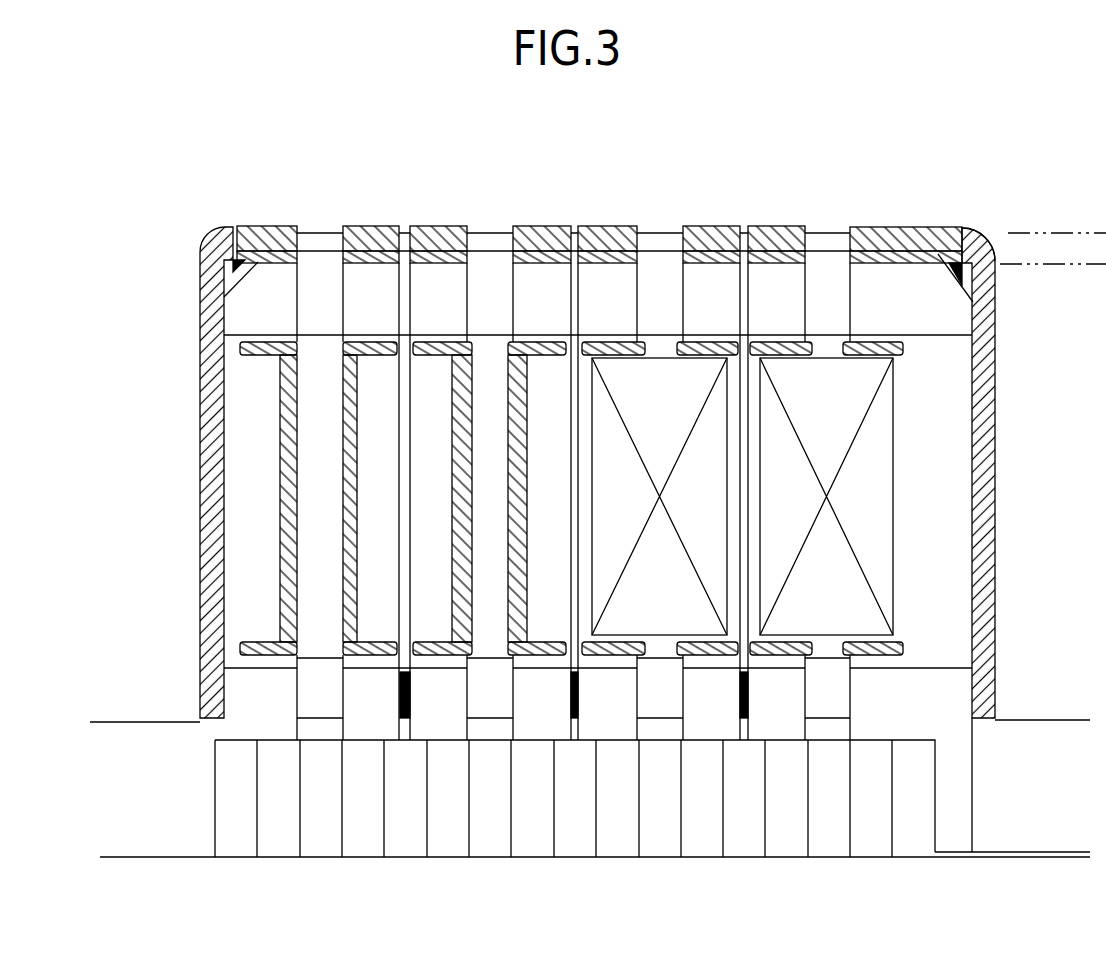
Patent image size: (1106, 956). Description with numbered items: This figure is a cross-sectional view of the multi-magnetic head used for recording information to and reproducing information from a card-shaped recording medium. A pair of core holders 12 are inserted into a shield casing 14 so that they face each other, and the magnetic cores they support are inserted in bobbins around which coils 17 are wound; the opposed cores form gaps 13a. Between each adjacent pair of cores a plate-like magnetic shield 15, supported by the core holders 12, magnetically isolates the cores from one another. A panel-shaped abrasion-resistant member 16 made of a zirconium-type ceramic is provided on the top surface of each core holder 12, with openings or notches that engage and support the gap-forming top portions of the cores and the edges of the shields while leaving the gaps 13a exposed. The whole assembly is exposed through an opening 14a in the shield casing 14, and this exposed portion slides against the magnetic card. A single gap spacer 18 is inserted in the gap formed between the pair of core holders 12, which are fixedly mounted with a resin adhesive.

The core holder 12 is at (257, 310).
The gap 13a is at (828, 236).
The shield casing 14 is at (995, 585).
The opening 14a is at (963, 230).
The magnetic shield 15 is at (743, 231).
The abrasion-resistant member 16 is at (267, 227).
The coil 17 is at (884, 491).
The gap spacer 18 is at (280, 484).